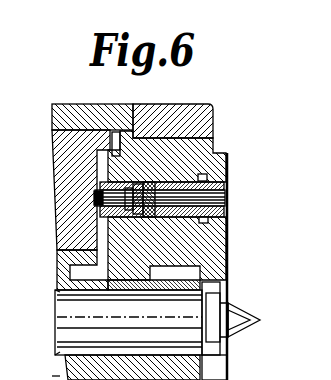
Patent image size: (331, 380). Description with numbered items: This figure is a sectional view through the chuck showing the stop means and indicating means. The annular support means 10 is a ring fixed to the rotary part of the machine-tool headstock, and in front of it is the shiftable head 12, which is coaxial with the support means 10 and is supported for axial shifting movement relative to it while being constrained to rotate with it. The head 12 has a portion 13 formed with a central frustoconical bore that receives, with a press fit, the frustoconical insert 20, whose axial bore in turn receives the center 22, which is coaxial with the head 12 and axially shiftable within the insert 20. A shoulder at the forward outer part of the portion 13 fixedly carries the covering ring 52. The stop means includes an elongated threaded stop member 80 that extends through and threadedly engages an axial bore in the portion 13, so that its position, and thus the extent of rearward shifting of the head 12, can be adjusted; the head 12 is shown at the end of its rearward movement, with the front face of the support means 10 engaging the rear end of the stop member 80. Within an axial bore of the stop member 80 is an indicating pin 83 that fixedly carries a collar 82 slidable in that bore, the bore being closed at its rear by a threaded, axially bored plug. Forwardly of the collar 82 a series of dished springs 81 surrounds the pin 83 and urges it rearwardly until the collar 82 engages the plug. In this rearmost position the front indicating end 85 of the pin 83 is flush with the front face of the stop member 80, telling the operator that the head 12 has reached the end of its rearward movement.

The covering ring 52 is at (212, 116).
The support means 10 is at (58, 181).
The portion of the shiftable head 13 is at (229, 254).
The threaded stop member 80 is at (226, 184).
The front indicating end 85 is at (226, 201).
The dished springs 81 is at (155, 218).
The collar 82 is at (142, 182).
The indicating pin 83 is at (136, 218).
The frustoconical insert 20 is at (62, 313).
The center 22 is at (248, 316).
The shiftable head 12 is at (34, 373).